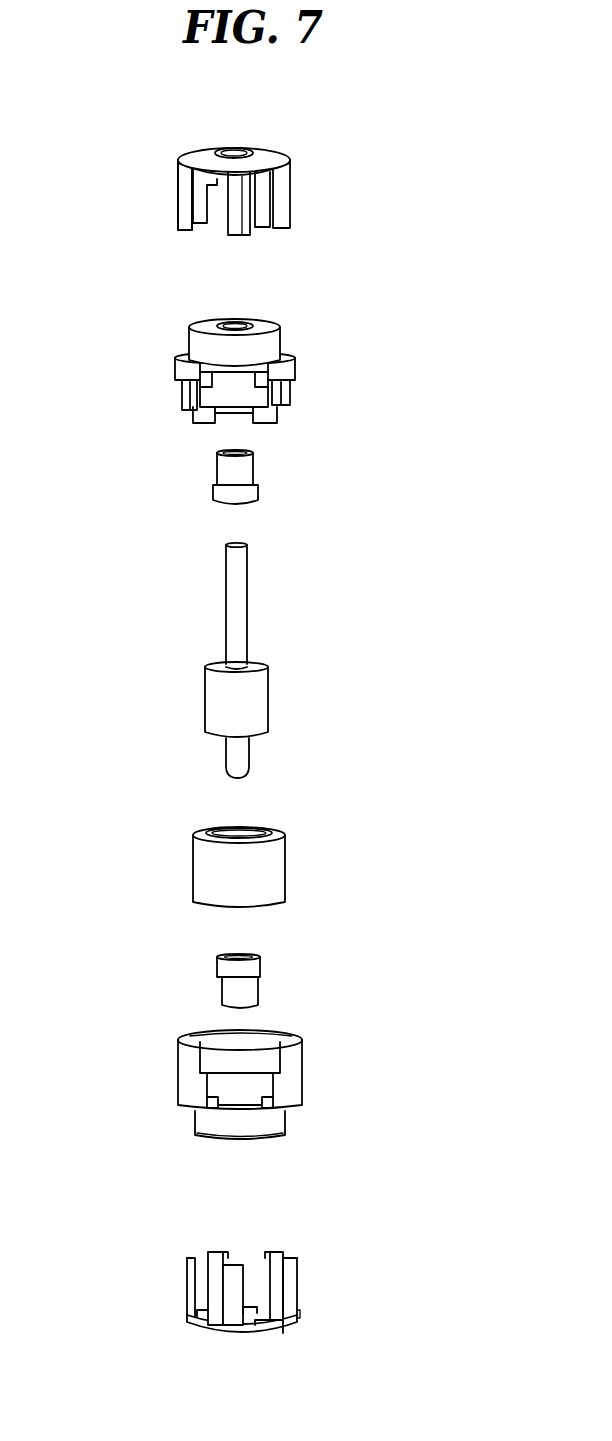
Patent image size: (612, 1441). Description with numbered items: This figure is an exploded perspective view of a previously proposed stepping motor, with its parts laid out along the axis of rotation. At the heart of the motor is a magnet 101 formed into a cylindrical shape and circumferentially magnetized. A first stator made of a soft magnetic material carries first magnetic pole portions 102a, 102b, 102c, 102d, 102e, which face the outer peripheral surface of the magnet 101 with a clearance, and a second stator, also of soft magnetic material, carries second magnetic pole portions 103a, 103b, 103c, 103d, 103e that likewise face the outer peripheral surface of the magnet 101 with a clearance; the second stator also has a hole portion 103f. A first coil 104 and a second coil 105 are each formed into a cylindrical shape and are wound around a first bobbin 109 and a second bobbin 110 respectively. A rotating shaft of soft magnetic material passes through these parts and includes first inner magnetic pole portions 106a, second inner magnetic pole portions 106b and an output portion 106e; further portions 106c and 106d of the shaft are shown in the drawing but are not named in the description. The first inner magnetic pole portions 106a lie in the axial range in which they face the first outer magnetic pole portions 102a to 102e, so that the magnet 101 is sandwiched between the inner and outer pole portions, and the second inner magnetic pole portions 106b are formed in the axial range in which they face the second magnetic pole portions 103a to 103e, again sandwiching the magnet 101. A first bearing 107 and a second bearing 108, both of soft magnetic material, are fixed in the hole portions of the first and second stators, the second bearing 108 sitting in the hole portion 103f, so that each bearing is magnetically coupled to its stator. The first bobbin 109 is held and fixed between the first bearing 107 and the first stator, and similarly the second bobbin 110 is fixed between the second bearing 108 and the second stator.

The magnet 101 is at (272, 870).
The first magnetic pole portion 102a is at (215, 1252).
The first magnetic pole portion 102b is at (277, 1252).
The first magnetic pole portion 102c is at (297, 1283).
The first magnetic pole portion 102d is at (233, 1263).
The first magnetic pole portion 102e is at (187, 1277).
The second magnetic pole portion 103a is at (196, 230).
The second magnetic pole portion 103b is at (178, 206).
The second magnetic pole portion 103c is at (242, 236).
The second magnetic pole portion 103d is at (290, 208).
The second magnetic pole portion 103e is at (262, 230).
The hole portion 103f is at (232, 150).
The first coil 104 is at (208, 1120).
The second coil 105 is at (265, 345).
The first inner magnetic pole portions 106a is at (258, 723).
The second inner magnetic pole portions 106b is at (262, 682).
The lower shaft portion 106c is at (247, 762).
The upper shaft portion 106d is at (240, 640).
The output portion 106e is at (237, 555).
The first bearing 107 is at (248, 993).
The second bearing 108 is at (247, 477).
The first bobbin 109 is at (290, 1087).
The second bobbin 110 is at (288, 368).